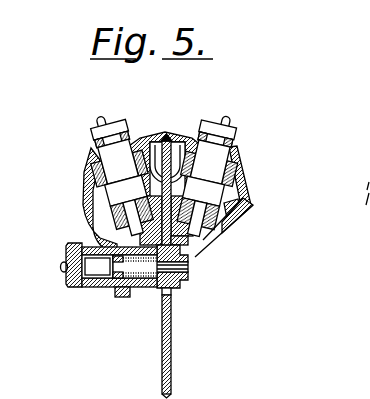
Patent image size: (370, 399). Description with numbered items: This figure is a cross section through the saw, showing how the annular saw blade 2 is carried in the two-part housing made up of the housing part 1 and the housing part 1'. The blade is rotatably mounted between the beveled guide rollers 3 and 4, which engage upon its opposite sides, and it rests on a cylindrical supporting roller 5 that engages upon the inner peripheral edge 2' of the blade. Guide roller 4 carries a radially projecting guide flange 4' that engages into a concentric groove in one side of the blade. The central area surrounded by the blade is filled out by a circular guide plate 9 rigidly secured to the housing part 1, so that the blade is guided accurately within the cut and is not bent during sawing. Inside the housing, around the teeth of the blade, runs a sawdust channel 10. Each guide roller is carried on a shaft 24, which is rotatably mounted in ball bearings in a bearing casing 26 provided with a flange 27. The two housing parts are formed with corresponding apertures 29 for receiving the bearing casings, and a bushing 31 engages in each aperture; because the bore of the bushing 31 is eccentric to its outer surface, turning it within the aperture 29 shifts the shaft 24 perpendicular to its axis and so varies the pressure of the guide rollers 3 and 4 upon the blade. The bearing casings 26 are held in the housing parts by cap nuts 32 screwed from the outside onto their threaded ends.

The housing part 1 is at (118, 191).
The housing part 1' is at (255, 176).
The annular saw blade 2 is at (173, 173).
The inner peripheral edge 2' is at (199, 251).
The beveled guide roller 3 is at (100, 221).
The beveled guide roller 4 is at (234, 227).
The guide flange 4' is at (250, 216).
The cylindrical supporting roller 5 is at (181, 285).
The circular guide plate 9 is at (171, 328).
The sawdust channel 10 is at (157, 140).
The shaft 24 is at (92, 229).
The bearing casing 26 is at (115, 157).
The flange 27 is at (112, 190).
The aperture 29 is at (95, 177).
The bushing 31 is at (92, 147).
The cap nut 32 is at (90, 133).